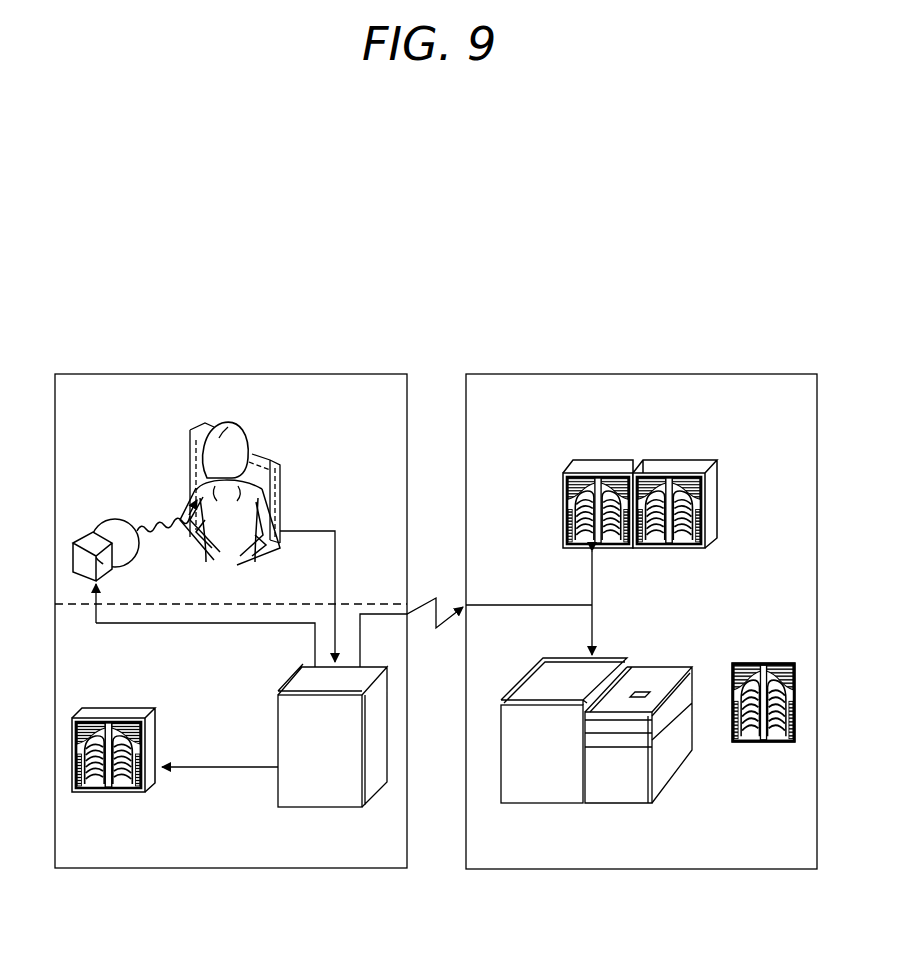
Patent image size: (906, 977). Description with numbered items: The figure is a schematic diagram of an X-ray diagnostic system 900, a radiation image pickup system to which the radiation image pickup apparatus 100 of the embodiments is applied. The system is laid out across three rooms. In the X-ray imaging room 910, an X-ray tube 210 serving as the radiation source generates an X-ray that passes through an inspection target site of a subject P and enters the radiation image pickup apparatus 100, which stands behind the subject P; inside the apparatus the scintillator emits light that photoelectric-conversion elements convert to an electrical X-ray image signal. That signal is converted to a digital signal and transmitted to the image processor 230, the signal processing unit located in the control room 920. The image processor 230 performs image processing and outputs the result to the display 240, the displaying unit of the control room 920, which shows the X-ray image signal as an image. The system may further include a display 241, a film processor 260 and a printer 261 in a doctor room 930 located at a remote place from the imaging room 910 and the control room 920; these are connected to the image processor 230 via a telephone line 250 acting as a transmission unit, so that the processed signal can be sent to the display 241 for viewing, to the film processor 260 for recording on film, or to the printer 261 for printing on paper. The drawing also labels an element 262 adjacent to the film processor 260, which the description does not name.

The X-ray diagnostic system 900 is at (433, 268).
The X-ray imaging room 910 is at (338, 373).
The control room 920 is at (350, 870).
The doctor room 930 is at (507, 870).
The radiation image pickup apparatus 100 is at (282, 478).
The X-ray tube 210 is at (92, 532).
The image processor 230 is at (312, 775).
The display 240 is at (128, 707).
The display 241 is at (575, 460).
The telephone line 250 is at (435, 598).
The film processor 260 is at (535, 775).
The printer 261 is at (743, 660).
The printer 262 is at (612, 775).
The subject P is at (248, 426).